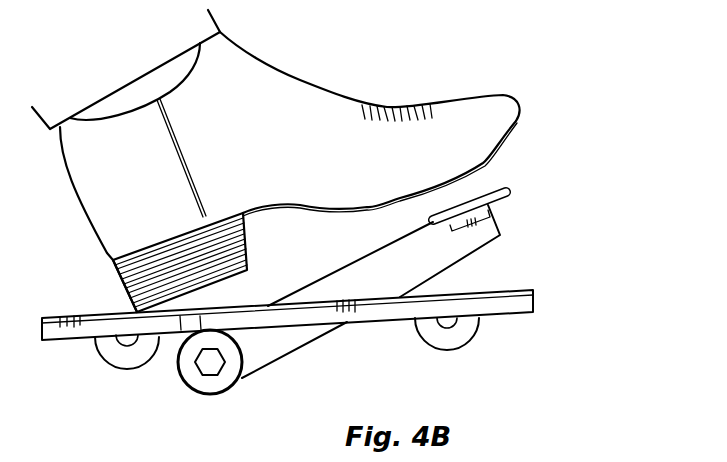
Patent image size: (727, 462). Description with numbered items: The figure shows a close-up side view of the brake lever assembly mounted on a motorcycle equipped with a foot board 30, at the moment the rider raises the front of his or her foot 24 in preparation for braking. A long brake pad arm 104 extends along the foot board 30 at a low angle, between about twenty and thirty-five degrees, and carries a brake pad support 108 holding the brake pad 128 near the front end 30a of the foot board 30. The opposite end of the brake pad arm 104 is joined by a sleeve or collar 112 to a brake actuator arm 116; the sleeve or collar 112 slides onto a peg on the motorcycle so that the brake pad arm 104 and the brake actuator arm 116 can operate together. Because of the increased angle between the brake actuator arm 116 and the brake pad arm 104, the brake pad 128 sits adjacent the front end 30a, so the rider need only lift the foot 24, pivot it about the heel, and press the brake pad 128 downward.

The foot 24 is at (278, 149).
The brake pad 128 is at (507, 188).
The brake pad support 108 is at (498, 226).
The brake pad arm 104 is at (478, 239).
The front end of the foot board 30a is at (527, 302).
The foot board 30 is at (350, 318).
The brake actuator arm 116 is at (180, 320).
The sleeve or collar 112 is at (228, 368).